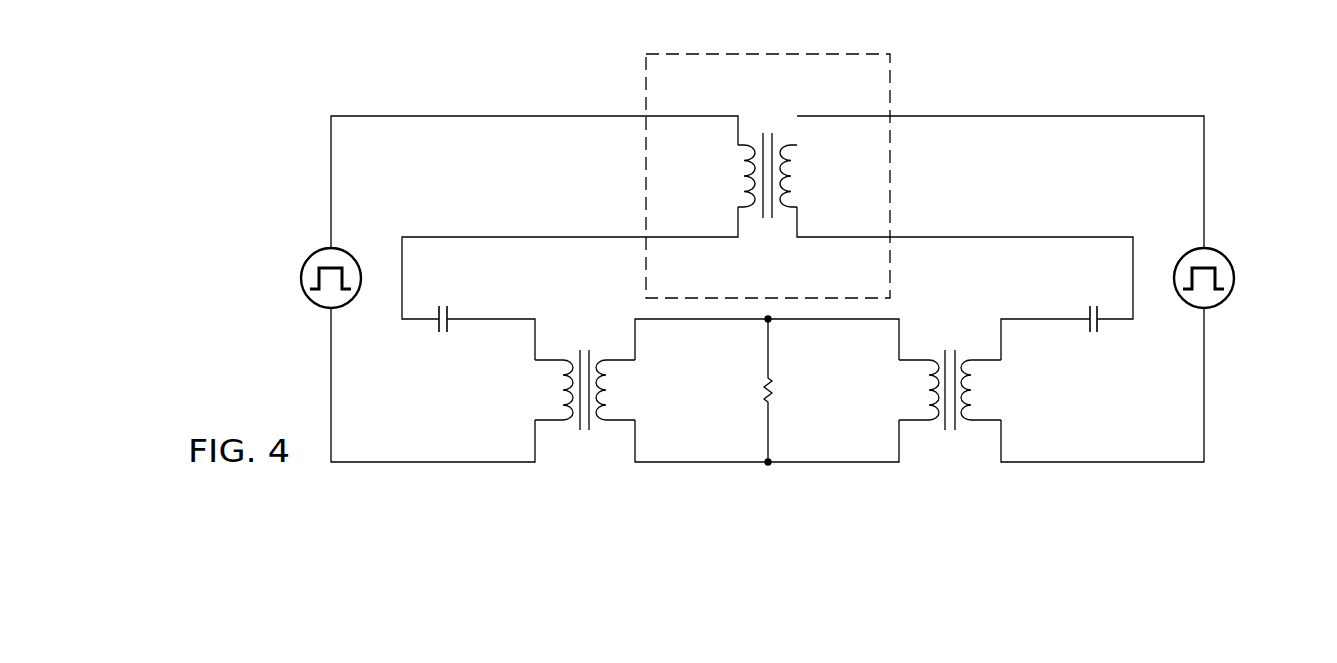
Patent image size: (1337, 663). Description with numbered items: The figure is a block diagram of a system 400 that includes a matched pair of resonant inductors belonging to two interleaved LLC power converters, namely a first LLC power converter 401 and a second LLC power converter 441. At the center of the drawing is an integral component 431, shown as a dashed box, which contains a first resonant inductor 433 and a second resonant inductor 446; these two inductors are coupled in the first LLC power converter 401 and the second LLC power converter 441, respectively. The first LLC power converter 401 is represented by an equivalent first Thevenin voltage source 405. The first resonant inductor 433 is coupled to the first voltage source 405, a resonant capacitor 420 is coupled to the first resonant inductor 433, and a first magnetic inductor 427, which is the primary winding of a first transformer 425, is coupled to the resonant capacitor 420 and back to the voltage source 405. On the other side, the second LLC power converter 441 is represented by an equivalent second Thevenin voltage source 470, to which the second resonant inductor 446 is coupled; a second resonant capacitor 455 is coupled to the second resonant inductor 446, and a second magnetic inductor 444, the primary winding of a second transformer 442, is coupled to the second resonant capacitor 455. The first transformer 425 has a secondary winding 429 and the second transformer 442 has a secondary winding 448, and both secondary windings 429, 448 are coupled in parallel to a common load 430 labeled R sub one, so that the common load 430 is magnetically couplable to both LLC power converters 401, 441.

The system 400 is at (192, 111).
The first LLC power converter 401 is at (370, 90).
The first Thevenin voltage source 405 is at (301, 278).
The resonant capacitor 420 is at (441, 331).
The first transformer 425 is at (584, 443).
The first magnetic inductor 427 is at (562, 378).
The secondary winding 429 is at (606, 378).
The common load R1 430 is at (762, 388).
The integral component 431 is at (694, 51).
The first resonant inductor 433 is at (755, 141).
The second LLC power converter 441 is at (1140, 86).
The second transformer 442 is at (951, 443).
The second magnetic inductor 444 is at (971, 378).
The second resonant inductor 446 is at (784, 212).
The secondary winding 448 is at (929, 378).
The second resonant capacitor 455 is at (1097, 331).
The second Thevenin voltage source 470 is at (1236, 278).